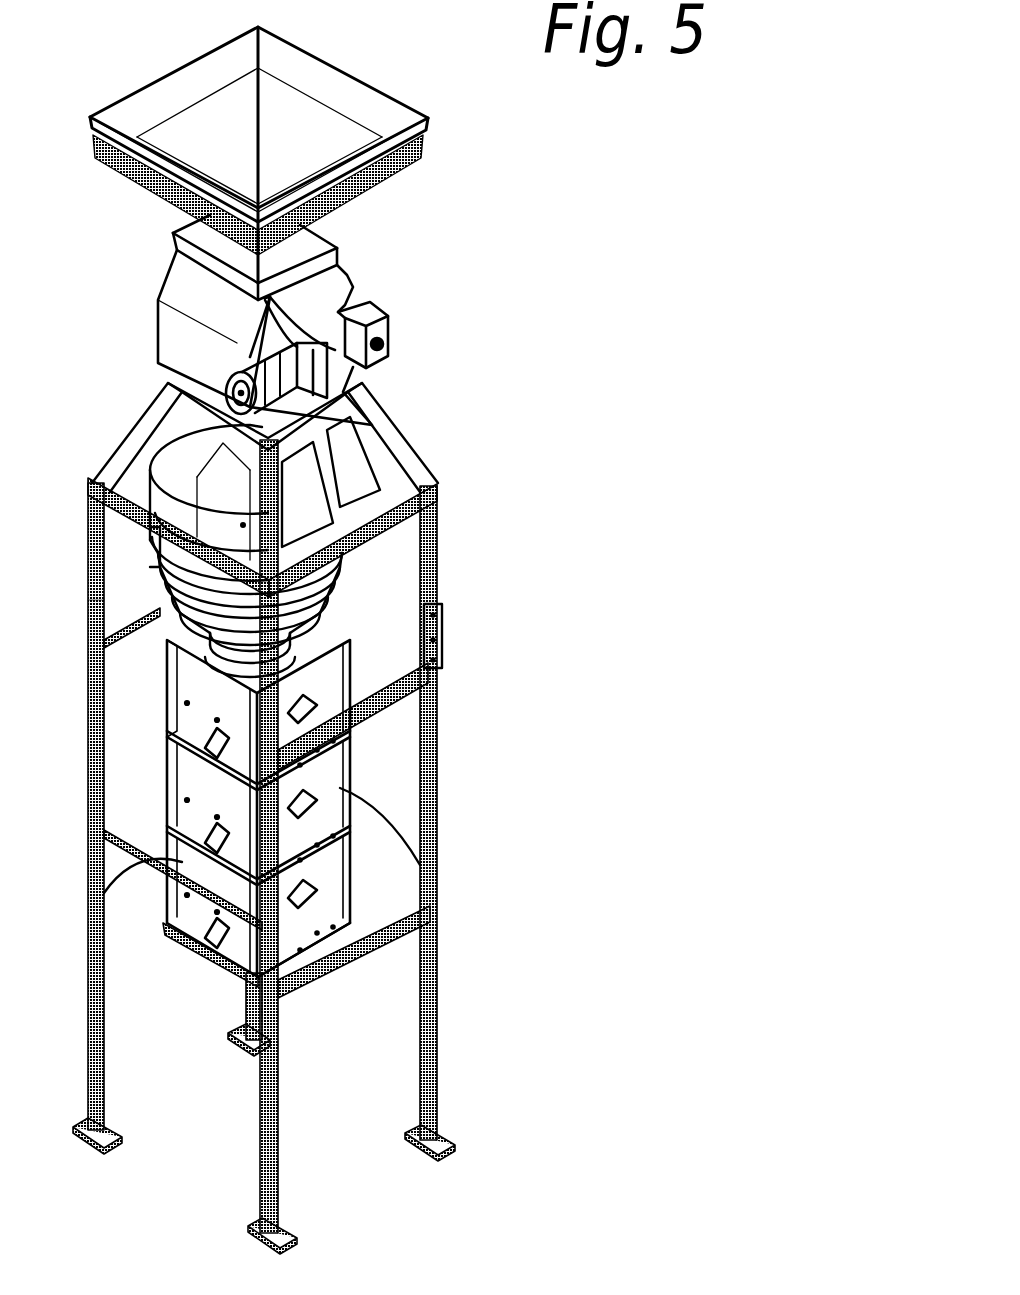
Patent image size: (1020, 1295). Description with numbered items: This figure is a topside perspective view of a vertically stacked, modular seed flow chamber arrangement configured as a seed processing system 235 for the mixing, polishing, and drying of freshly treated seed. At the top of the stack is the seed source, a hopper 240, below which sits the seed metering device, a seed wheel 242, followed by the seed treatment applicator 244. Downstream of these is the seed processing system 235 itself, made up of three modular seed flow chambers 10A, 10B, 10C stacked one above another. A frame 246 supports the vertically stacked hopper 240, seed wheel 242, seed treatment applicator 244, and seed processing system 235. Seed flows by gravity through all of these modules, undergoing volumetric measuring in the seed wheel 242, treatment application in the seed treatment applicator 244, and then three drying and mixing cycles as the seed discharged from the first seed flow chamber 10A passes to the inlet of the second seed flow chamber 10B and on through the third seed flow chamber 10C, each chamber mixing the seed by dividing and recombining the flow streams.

The hopper 240 is at (378, 188).
The seed wheel 242 is at (352, 284).
The seed treatment applicator 244 is at (347, 598).
The frame 246 is at (438, 545).
The first seed flow chamber 10A is at (350, 641).
The second seed flow chamber 10B is at (350, 755).
The third seed flow chamber 10C is at (350, 873).
The seed processing system 235 is at (125, 748).